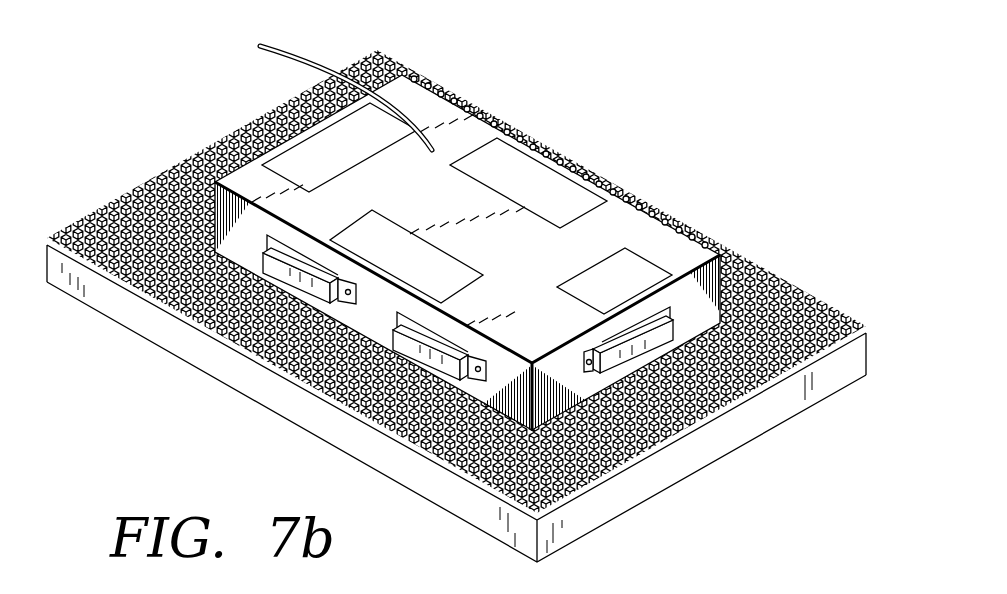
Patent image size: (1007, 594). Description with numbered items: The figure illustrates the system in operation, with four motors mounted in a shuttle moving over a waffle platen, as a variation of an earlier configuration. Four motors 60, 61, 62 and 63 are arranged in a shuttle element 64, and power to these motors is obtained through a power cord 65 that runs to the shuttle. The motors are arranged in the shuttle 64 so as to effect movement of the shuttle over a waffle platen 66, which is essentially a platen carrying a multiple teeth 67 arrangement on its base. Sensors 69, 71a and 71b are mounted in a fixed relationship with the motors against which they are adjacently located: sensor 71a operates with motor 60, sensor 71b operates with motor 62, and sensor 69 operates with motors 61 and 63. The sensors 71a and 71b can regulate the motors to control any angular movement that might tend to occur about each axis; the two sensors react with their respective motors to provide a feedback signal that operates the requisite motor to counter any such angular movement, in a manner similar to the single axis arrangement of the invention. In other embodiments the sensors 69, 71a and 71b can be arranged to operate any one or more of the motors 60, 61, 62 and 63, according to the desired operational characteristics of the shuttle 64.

The motor 60 is at (356, 159).
The motor 61 is at (534, 188).
The motor 62 is at (639, 284).
The motor 63 is at (393, 254).
The shuttle element 64 is at (644, 237).
The power cord 65 is at (301, 53).
The waffle platen 66 is at (866, 348).
The multiple teeth 67 is at (226, 384).
The sensor 69 is at (627, 330).
The sensor 71a is at (289, 251).
The sensor 71b is at (441, 342).